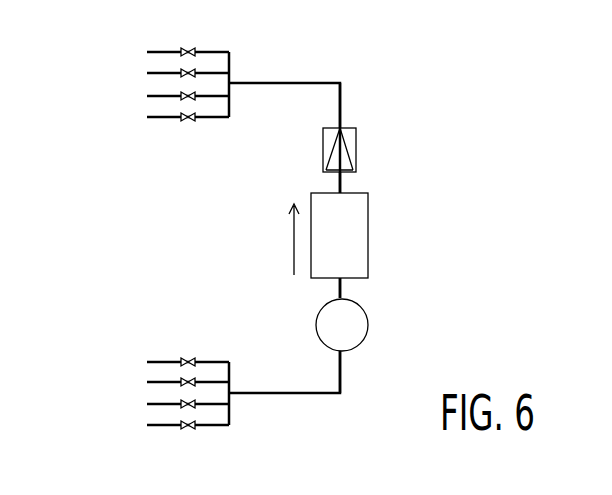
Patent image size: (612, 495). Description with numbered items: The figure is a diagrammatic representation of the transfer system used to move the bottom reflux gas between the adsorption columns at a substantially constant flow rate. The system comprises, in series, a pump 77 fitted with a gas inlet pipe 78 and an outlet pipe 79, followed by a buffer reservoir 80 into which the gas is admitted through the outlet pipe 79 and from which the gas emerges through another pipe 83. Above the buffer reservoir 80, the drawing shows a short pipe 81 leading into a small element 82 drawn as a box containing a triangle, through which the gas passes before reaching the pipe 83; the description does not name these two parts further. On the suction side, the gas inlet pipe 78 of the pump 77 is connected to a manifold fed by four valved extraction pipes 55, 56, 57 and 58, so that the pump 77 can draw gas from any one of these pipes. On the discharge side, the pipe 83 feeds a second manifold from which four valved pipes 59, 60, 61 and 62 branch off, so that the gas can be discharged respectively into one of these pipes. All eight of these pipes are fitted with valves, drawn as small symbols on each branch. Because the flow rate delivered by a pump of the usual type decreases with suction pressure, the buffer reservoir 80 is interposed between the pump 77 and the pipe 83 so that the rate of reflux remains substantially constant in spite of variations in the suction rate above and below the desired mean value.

The pipe 55 is at (160, 426).
The pipe 56 is at (160, 405).
The pipe 57 is at (160, 382).
The pipe 58 is at (160, 362).
The pipe 59 is at (160, 118).
The pipe 60 is at (160, 97).
The pipe 61 is at (160, 73).
The pipe 62 is at (160, 52).
The pump 77 is at (322, 318).
The gas inlet pipe 78 is at (343, 363).
The outlet pipe 79 is at (342, 287).
The buffer reservoir 80 is at (360, 220).
The conduit 81 is at (338, 176).
The filter 82 is at (353, 148).
The pipe 83 is at (342, 95).